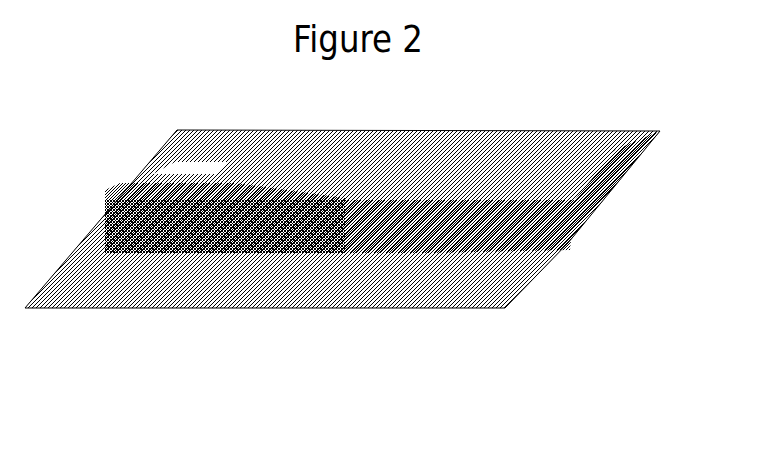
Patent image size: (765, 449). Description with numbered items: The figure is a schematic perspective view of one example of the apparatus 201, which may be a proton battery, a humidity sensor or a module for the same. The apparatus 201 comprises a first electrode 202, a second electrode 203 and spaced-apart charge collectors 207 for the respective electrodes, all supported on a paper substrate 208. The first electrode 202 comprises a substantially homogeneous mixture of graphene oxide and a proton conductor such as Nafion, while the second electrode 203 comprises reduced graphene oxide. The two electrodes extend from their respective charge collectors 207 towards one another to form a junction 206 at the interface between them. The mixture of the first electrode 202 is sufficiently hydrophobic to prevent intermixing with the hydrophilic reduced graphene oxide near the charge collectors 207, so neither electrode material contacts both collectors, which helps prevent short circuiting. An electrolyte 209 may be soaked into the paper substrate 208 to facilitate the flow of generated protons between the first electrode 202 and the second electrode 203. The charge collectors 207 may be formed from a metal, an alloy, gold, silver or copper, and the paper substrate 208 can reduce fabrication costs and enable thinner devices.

The apparatus 201 is at (640, 87).
The first electrode 202 is at (188, 243).
The second electrode 203 is at (533, 182).
The junction 206 is at (327, 227).
The charge collectors 207 is at (180, 168).
The paper substrate 208 is at (342, 219).
The electrolyte 209 is at (410, 313).